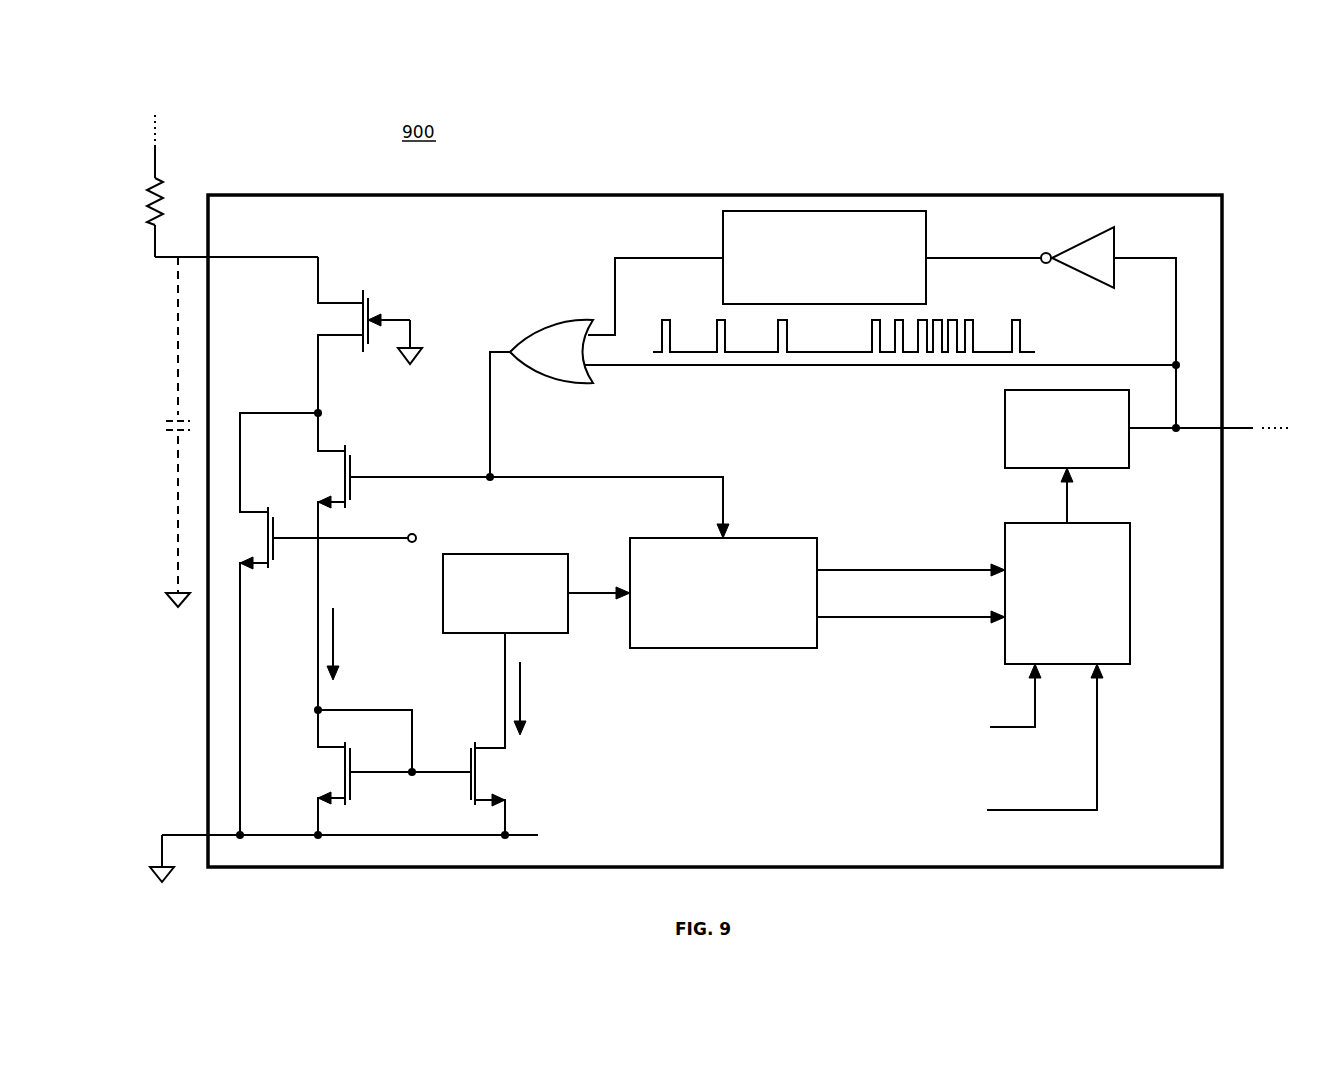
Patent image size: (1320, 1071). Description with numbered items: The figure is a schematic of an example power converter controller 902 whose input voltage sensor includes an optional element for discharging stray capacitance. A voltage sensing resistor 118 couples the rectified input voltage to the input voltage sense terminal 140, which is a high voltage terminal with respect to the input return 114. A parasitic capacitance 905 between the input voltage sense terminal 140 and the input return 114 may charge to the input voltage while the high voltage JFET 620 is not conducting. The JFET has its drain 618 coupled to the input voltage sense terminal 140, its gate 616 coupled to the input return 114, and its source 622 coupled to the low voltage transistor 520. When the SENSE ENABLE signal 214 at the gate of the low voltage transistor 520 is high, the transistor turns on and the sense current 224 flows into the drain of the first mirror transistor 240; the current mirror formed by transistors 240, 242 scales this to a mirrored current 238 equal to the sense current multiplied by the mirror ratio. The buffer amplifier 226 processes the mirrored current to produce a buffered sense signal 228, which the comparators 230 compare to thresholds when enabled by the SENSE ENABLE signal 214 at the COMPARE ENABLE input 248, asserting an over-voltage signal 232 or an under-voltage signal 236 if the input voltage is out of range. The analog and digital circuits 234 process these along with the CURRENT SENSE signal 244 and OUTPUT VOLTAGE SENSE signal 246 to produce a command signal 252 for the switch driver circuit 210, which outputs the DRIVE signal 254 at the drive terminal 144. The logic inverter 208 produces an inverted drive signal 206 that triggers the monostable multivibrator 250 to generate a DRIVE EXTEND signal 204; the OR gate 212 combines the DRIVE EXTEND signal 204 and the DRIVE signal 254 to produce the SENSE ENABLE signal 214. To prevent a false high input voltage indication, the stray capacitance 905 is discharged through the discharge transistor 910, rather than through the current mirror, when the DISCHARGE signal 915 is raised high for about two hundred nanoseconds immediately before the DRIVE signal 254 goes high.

The power converter controller 902 is at (598, 187).
The voltage sensing resistor R1 118 is at (177, 186).
The input voltage sense terminal 140 is at (163, 268).
The parasitic capacitance 905 is at (163, 443).
The input return 114 is at (420, 368).
The drain D of high voltage transistor 618 is at (332, 256).
The high voltage JFET QHV 620 is at (322, 323).
The source S of high voltage JFET 622 is at (312, 357).
The gate G of high voltage JFET 616 is at (403, 310).
The low voltage transistor QLV 520 is at (320, 468).
The SENSE ENABLE signal 214 is at (498, 410).
The transistor QCD 910 is at (267, 573).
The DISCHARGE signal 915 is at (412, 550).
The current IR1 224 is at (340, 628).
The current mirror transistor 240 is at (335, 770).
The current mirror transistor 242 is at (492, 770).
The mirrored current IMR1 238 is at (532, 680).
The buffer amplifier 226 is at (473, 642).
The buffered sense signal 228 is at (602, 583).
The comparators 230 is at (677, 530).
The COMPARE ENABLE input 248 is at (732, 510).
The over-voltage signal 232 is at (865, 562).
The under-voltage signal 236 is at (865, 628).
The analog and digital circuits 234 is at (1135, 575).
The command signal 252 is at (1077, 502).
The CURRENT SENSE signal 244 is at (1008, 730).
The OUTPUT VOLTAGE SENSE signal 246 is at (1017, 817).
The switch driver circuit 210 is at (995, 428).
The DRIVE signal 254 is at (1143, 253).
The drive terminal 144 is at (1245, 437).
The inverted drive signal 206 is at (1003, 252).
The logic inverter 208 is at (1090, 287).
The monostable multivibrator 250 is at (722, 287).
The DRIVE EXTEND signal 204 is at (607, 267).
The OR gate 212 is at (533, 365).